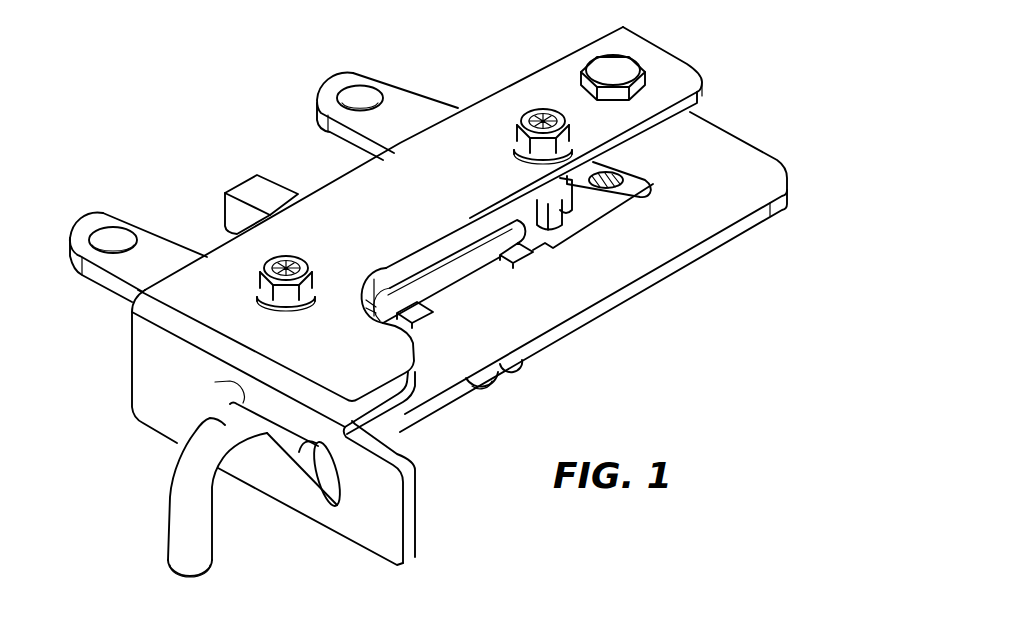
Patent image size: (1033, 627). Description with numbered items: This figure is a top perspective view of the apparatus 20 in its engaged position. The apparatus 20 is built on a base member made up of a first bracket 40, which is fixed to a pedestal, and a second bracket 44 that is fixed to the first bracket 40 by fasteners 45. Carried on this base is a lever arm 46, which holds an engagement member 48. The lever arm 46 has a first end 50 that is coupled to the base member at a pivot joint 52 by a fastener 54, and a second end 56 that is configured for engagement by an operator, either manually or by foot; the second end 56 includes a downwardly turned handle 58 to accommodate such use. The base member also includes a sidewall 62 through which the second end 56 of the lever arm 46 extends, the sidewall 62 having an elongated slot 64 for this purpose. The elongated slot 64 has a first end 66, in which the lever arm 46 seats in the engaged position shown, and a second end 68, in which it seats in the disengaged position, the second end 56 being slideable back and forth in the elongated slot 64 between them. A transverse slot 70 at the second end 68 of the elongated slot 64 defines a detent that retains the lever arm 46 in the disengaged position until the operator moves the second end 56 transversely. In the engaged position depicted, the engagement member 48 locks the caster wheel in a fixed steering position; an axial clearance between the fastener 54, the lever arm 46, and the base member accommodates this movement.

The apparatus 20 is at (797, 48).
The first bracket 40 is at (332, 87).
The second bracket 44 is at (340, 207).
The fasteners 45 is at (543, 107).
The lever arm 46 is at (633, 256).
The engagement member 48 is at (248, 192).
The first end 50 is at (732, 130).
The pivot joint 52 is at (681, 54).
The fastener 54 is at (603, 68).
The second end 56 is at (233, 403).
The downwardly turned handle 58 is at (182, 500).
The sidewall 62 is at (373, 505).
The elongated slot 64 is at (280, 462).
The first end 66 is at (215, 382).
The second end 68 is at (323, 504).
The transverse slot 70 is at (318, 448).